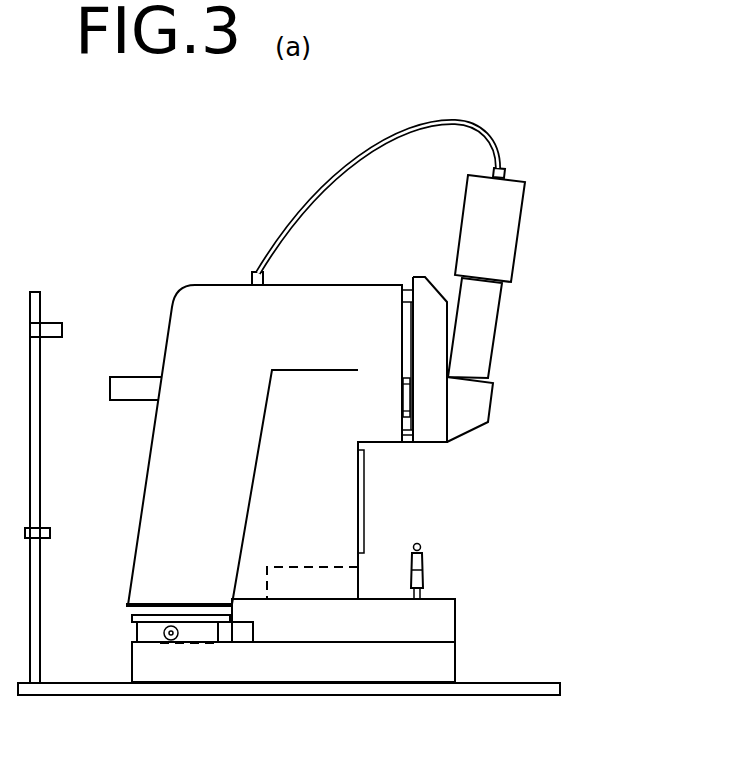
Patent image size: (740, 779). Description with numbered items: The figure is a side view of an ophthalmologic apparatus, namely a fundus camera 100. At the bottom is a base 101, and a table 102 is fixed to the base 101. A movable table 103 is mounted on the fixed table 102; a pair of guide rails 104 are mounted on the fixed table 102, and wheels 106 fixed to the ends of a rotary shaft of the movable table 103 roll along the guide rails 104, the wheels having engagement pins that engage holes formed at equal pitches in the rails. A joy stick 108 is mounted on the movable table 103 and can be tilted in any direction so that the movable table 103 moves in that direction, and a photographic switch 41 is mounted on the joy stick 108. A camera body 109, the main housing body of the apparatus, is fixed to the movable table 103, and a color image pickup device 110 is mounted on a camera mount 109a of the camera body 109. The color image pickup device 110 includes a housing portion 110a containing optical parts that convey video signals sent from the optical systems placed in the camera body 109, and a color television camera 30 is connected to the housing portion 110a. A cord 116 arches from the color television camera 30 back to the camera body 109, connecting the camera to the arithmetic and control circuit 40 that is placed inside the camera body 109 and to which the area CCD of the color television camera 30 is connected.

The fundus camera 100 is at (204, 211).
The base 101 is at (523, 697).
The table 102 is at (451, 667).
The movable table 103 is at (451, 624).
The guide rails 104 is at (160, 643).
The wheels 106 is at (178, 629).
The joy stick 108 is at (425, 577).
The camera body 109 is at (177, 311).
The camera mount 109a is at (406, 402).
The color image pickup device 110 is at (603, 263).
The housing portion 110a is at (487, 343).
The cord 116 is at (322, 175).
The color television camera 30 is at (503, 257).
The arithmetic and control circuit 40 is at (335, 567).
The photographic switch 41 is at (420, 543).